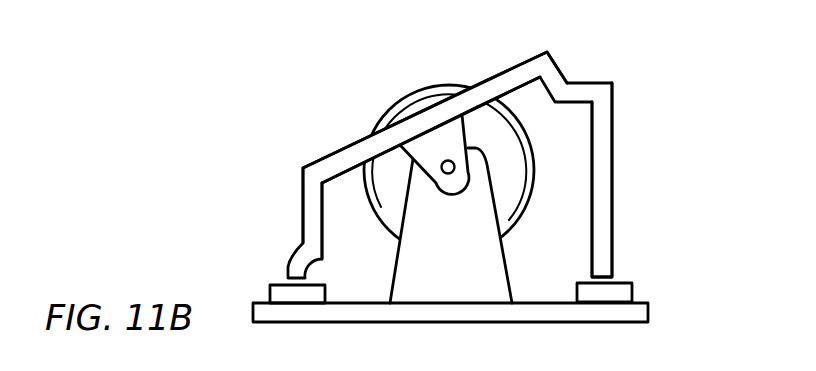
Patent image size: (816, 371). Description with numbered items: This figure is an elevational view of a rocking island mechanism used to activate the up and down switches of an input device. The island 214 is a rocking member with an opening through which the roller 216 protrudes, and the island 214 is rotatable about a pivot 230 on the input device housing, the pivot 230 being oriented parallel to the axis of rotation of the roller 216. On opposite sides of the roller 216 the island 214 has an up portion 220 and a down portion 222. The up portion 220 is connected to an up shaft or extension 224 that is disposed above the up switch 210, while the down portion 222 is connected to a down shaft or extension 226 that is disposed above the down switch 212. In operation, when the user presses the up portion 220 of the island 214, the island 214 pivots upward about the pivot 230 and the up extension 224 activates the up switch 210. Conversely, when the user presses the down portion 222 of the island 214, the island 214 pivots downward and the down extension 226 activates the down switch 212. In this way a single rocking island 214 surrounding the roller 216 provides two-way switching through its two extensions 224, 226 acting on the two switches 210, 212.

The up switch 210 is at (618, 282).
The down switch 212 is at (277, 283).
The island 214 is at (560, 65).
The roller 216 is at (397, 103).
The up portion 220 is at (500, 72).
The down portion 222 is at (332, 154).
The up shaft or extension 224 is at (613, 135).
The down shaft or extension 226 is at (303, 197).
The pivot 230 is at (452, 170).